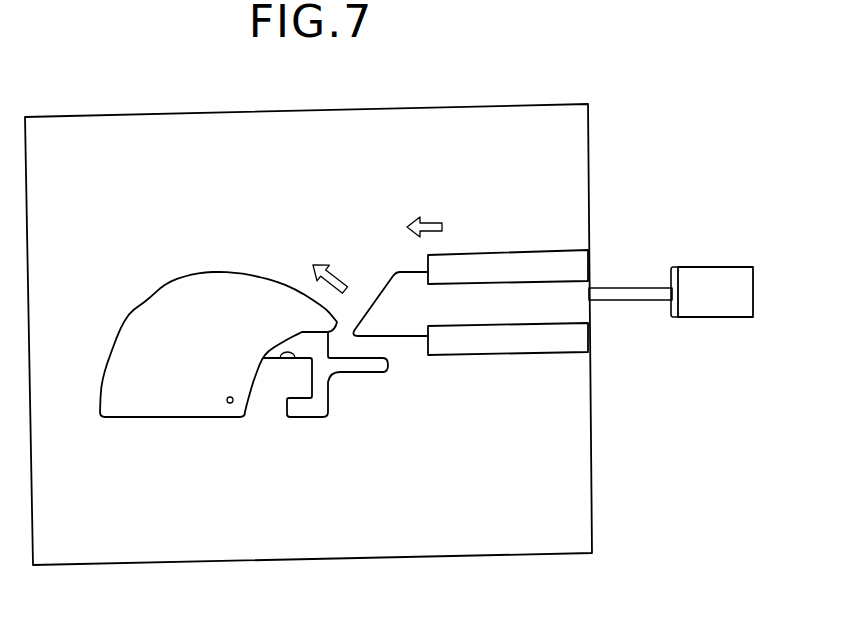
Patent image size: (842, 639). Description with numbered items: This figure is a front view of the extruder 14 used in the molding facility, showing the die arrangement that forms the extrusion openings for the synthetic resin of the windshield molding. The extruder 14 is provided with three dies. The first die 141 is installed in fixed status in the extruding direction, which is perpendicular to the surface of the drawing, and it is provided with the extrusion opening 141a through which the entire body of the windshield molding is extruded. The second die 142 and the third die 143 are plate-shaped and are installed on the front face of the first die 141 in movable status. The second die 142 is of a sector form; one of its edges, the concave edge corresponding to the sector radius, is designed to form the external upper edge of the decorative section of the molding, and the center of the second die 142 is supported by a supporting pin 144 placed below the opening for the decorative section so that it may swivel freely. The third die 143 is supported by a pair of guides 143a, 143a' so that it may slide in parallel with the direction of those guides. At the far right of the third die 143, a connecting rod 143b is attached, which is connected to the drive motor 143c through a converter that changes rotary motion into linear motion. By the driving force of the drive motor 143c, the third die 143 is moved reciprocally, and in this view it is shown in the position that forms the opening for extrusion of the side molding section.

The extruder 14 is at (389, 346).
The first die 141 is at (454, 535).
The extrusion opening 141a is at (277, 358).
The second die 142 is at (258, 288).
The third die 143 is at (393, 294).
The guide 143a is at (508, 235).
The guide 143a' is at (508, 369).
The connecting rod 143b is at (620, 293).
The drive motor 143c is at (722, 303).
The supporting pin 144 is at (227, 402).